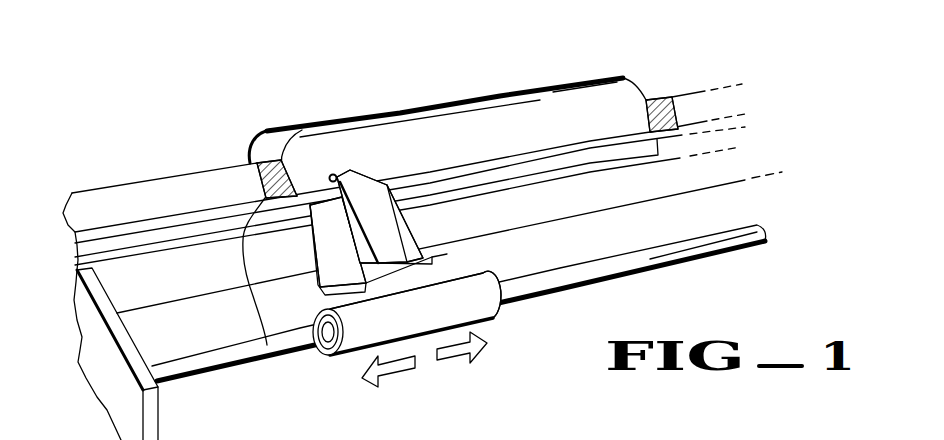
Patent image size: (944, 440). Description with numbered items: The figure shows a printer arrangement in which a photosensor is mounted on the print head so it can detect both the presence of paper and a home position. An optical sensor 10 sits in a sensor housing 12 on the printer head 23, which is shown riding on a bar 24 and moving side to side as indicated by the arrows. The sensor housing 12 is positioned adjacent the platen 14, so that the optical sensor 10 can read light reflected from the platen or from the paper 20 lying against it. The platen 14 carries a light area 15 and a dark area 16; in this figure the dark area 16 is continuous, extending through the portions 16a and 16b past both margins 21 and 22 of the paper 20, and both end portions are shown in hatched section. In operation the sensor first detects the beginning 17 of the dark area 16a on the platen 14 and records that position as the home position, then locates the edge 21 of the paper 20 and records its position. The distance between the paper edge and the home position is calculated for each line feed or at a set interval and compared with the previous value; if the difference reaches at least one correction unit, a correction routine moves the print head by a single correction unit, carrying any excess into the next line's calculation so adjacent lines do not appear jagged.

The optical sensor 10 is at (332, 174).
The sensor housing 12 is at (357, 182).
The platen 14 is at (215, 185).
The light area 15 is at (173, 192).
The dark area 16 is at (276, 137).
The dark area portion 16a is at (258, 160).
The dark area portion 16b is at (672, 100).
The beginning of the dark area 17 is at (265, 350).
The paper 20 is at (486, 115).
The margin 21 is at (290, 148).
The margin 22 is at (643, 97).
The printer head 23 is at (490, 318).
The bar 24 is at (603, 266).